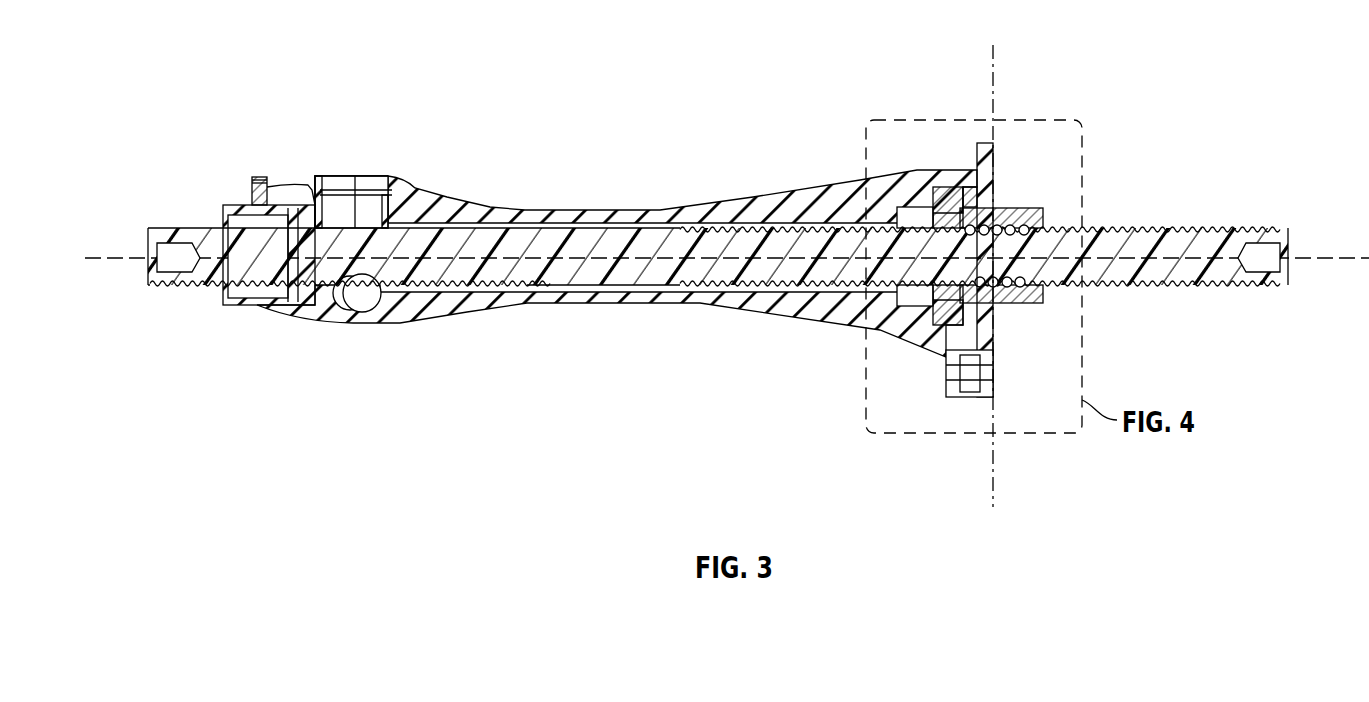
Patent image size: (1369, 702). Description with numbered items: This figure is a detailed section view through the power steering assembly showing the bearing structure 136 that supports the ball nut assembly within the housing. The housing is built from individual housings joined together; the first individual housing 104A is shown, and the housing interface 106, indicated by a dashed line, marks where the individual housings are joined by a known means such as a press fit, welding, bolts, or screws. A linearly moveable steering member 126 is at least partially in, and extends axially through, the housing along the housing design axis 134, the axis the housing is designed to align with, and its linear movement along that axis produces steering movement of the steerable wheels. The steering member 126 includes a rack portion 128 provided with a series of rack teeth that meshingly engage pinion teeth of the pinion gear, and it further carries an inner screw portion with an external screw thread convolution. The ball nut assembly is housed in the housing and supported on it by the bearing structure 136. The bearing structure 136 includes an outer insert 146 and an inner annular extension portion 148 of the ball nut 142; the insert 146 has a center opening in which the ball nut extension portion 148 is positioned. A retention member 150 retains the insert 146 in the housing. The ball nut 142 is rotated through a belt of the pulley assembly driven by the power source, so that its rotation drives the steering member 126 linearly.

The first individual housing 104A is at (585, 210).
The housing interface 106 is at (995, 70).
The steering member 126 is at (610, 270).
The rack portion 128 is at (498, 302).
The housing design axis 134 is at (1322, 259).
The bearing structure 136 is at (1002, 200).
The ball nut 142 is at (1043, 228).
The insert 146 is at (940, 190).
The annular extension portion 148 is at (945, 308).
The retention member 150 is at (998, 170).